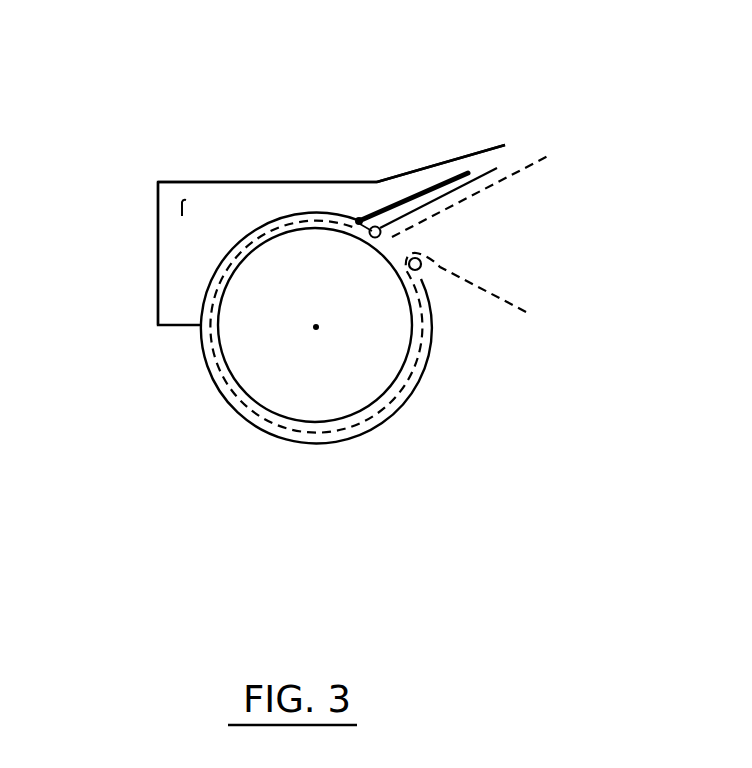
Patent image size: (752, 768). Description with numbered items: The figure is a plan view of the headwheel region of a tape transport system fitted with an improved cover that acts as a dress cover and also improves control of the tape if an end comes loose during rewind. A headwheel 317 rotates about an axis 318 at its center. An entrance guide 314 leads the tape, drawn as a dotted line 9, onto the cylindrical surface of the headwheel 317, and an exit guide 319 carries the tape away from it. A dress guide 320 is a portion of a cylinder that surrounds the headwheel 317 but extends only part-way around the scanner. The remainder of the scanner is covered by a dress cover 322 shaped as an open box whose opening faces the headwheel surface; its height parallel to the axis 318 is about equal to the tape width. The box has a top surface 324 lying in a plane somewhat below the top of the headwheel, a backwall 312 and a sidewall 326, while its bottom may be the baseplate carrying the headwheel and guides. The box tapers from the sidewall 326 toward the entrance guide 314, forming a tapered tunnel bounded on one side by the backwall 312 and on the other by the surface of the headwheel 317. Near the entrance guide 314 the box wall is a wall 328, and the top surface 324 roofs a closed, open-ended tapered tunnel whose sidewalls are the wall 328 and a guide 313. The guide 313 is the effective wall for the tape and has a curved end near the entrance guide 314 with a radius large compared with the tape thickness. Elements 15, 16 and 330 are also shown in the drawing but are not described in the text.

The tape 9 is at (532, 163).
The web wrapped around drum 15 is at (213, 265).
The drum 16 is at (200, 353).
The backwall 312 is at (278, 181).
The guide 313 is at (413, 190).
The entrance guide 314 is at (410, 239).
The headwheel 317 is at (289, 384).
The axis 318 is at (316, 327).
The exit guide 319 is at (421, 270).
The dress guide 320 is at (368, 435).
The dress cover 322 is at (167, 80).
The top surface 324 is at (180, 208).
The sidewall 326 is at (157, 298).
The wall 328 is at (456, 158).
The guide pin 330 is at (452, 191).